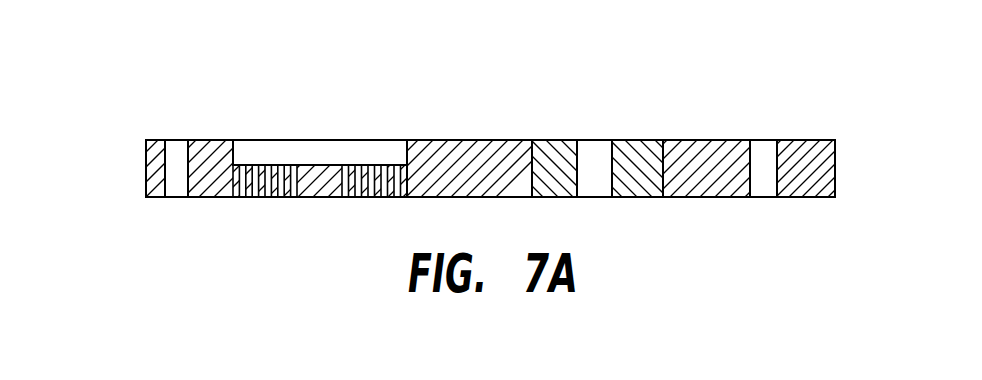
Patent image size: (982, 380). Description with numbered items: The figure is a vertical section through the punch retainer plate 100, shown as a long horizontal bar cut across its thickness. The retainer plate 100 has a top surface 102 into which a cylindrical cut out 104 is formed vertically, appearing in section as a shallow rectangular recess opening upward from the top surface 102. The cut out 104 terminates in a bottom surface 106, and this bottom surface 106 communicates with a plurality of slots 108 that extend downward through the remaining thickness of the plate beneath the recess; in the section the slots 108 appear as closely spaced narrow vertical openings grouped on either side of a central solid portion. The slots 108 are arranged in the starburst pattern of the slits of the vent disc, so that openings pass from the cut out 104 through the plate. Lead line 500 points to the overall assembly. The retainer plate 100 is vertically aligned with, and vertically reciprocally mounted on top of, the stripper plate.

The assembled device 500 is at (256, 106).
The retainer plate 100 is at (144, 164).
The top surface 102 is at (208, 140).
The cylindrical cut out 104 is at (304, 153).
The bottom surface 106 is at (338, 165).
The slots 108 is at (365, 188).